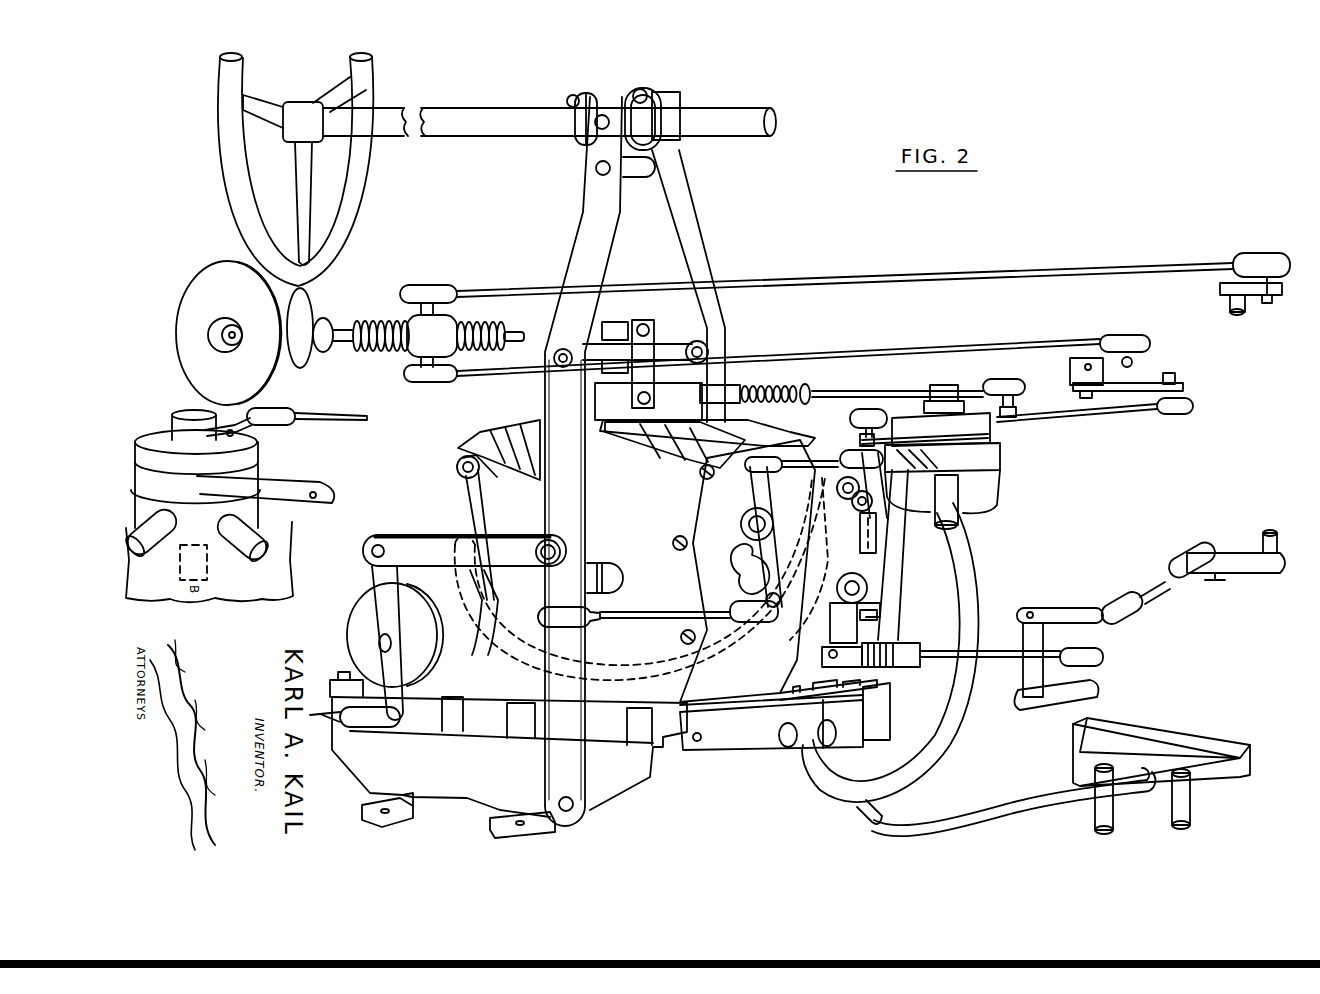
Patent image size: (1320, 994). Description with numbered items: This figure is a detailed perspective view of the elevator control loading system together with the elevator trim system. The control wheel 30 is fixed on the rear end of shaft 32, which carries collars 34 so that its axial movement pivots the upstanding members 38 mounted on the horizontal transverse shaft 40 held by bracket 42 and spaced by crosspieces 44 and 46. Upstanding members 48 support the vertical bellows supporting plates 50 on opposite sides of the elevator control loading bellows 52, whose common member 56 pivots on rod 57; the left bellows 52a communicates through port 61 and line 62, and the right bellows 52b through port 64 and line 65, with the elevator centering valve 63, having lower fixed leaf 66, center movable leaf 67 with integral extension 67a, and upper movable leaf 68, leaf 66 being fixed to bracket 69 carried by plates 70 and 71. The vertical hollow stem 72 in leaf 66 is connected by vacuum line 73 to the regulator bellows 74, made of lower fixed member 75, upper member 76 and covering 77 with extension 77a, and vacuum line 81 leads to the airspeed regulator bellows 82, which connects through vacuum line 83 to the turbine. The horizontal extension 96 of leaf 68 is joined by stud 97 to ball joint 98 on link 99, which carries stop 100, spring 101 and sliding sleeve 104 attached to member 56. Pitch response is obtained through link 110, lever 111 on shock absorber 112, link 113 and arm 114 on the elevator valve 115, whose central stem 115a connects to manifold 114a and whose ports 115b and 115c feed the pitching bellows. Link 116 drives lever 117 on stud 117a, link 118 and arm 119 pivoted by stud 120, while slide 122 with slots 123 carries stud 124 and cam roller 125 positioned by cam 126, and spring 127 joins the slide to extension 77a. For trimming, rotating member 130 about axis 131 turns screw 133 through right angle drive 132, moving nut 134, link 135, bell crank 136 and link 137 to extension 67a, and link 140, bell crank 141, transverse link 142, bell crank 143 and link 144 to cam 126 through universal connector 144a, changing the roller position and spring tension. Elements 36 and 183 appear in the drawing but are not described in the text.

The control wheel 30 is at (362, 167).
The forwardly extending shaft 32 is at (436, 128).
The collars 34 is at (583, 133).
The bearing bolt 36 is at (574, 100).
The upstanding members 38 is at (590, 232).
The horizontal transverse shaft 40 is at (566, 812).
The bracket 42 is at (620, 778).
The crosspiece 44 is at (666, 345).
The crosspiece 46 is at (638, 170).
The upstanding members 48 is at (505, 726).
The bellows supporting plates 50 is at (468, 484).
The elevator control loading bellows 52 is at (510, 419).
The left bellows 52a is at (472, 432).
The right bellows 52b is at (797, 422).
The common bellows-forming member 56 is at (618, 396).
The rod 57 is at (625, 305).
The port 61 is at (467, 538).
The line 62 is at (467, 580).
The elevator centering valve 63 is at (1035, 457).
The port 64 is at (745, 553).
The vacuum-air line 65 is at (809, 559).
The lower fixed leaf 66 is at (980, 456).
The center movable leaf 67 is at (992, 441).
The integral extension 67a is at (897, 440).
The upper movable leaf 68 is at (904, 400).
The bracket 69 is at (990, 478).
The plate 70 is at (878, 708).
The plate 71 is at (705, 510).
The vertical hollow stem 72 is at (948, 490).
The vacuum line 73 is at (968, 575).
The elevator control loading regulator bellows 74 is at (770, 762).
The lower fixed member 75 is at (712, 740).
The upper member 76 is at (750, 705).
The flexible airtight covering 77 is at (780, 712).
The extension 77a is at (835, 690).
The vacuum line 81 is at (1010, 797).
The airspeed regulator bellows 82 is at (1172, 715).
The vacuum line 83 is at (1110, 805).
The horizontal extension 96 is at (1002, 418).
The stud 97 is at (1014, 400).
The ball joint 98 is at (1006, 384).
The link 99 is at (861, 388).
The stop 100 is at (812, 388).
The spring 101 is at (768, 391).
The sliding sleeve 104 is at (733, 390).
The link 110 is at (515, 540).
The lever 111 is at (372, 580).
The shock absorber 112 is at (352, 632).
The link 113 is at (320, 419).
The arm 114 is at (229, 432).
The manifold 114a is at (305, 537).
The elevator valve 115 is at (166, 412).
The central stem 115a is at (207, 566).
The port 115b is at (156, 530).
The port 115c is at (236, 538).
The link 116 is at (640, 620).
The lever 117 is at (758, 493).
The stud 117a is at (741, 527).
The link 118 is at (818, 457).
The arm 119 is at (880, 487).
The stud 120 is at (848, 608).
The slide 122 is at (885, 605).
The slots 123 is at (882, 540).
The stud 124 is at (838, 490).
The cam roller 125 is at (853, 504).
The cam 126 is at (878, 563).
The spring 127 is at (822, 658).
The elevator trimming member 130 is at (216, 272).
The horizontal axis 131 is at (209, 335).
The right angle drive 132 is at (314, 312).
The screw 133 is at (372, 348).
The nut 134 is at (450, 327).
The link 135 is at (858, 356).
The bell crank 136 is at (1080, 362).
The link 137 is at (1101, 410).
The link 140 is at (918, 277).
The bell crank 141 is at (1258, 294).
The transverse link 142 is at (1150, 588).
The bell crank 143 is at (1055, 615).
The rearwardly extending link 144 is at (1000, 660).
The universal connector 144a is at (915, 660).
The post 183 is at (1188, 802).